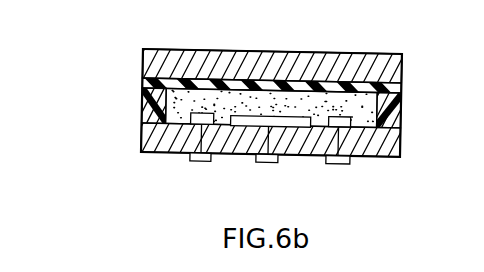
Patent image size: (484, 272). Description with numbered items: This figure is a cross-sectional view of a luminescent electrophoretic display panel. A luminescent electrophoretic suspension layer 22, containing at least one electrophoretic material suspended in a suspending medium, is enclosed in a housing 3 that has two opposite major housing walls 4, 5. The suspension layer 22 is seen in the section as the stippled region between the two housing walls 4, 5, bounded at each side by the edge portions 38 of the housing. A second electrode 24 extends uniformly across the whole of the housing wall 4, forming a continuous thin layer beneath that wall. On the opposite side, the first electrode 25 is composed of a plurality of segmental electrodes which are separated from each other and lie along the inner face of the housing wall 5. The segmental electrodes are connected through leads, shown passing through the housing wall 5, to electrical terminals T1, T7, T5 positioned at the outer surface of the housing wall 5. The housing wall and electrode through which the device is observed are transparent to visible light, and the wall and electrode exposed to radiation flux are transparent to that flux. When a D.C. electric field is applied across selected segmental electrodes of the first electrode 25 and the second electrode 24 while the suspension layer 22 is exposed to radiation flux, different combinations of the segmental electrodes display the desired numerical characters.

The housing 3 is at (141, 45).
The housing wall 4 is at (150, 63).
The second electrode 24 is at (143, 84).
The side wall conductor 38 is at (152, 103).
The luminescent electrophoretic suspension layer 22 is at (142, 128).
The housing wall 5 is at (142, 148).
The first electrode 25 is at (171, 154).
The electrical terminal T1 is at (202, 172).
The electrical terminal T7 is at (267, 173).
The electrical terminal T5 is at (338, 176).